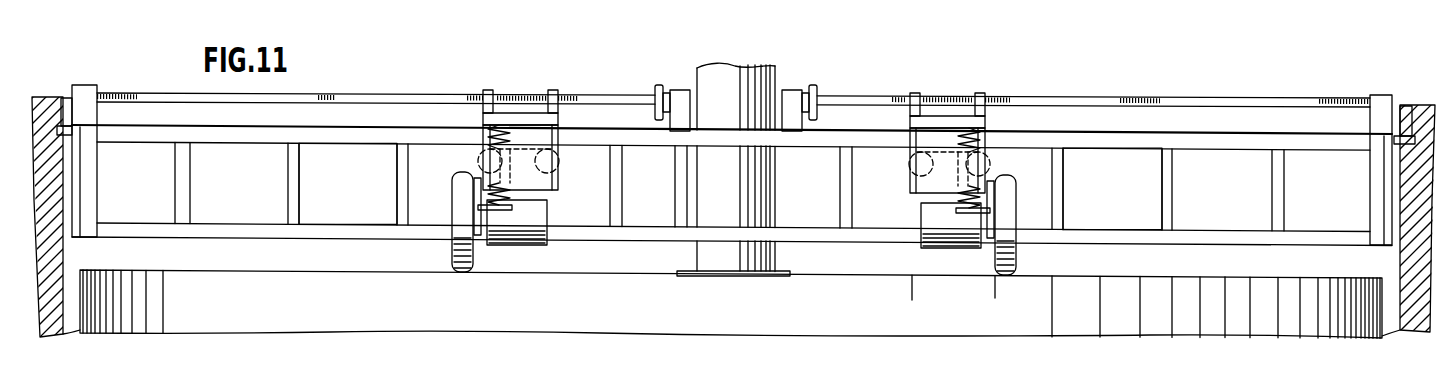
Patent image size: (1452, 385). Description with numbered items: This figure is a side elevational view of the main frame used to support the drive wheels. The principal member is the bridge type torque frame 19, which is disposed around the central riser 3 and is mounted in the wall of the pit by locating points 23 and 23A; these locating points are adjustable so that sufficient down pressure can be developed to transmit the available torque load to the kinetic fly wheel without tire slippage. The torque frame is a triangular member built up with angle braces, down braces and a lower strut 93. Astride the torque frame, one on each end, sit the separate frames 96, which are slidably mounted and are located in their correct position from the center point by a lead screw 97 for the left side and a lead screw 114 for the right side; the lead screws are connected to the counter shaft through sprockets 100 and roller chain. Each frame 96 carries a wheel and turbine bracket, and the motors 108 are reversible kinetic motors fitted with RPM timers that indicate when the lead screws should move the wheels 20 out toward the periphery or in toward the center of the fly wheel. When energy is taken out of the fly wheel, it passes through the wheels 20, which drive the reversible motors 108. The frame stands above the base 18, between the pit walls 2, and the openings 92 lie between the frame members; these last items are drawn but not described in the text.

The wall 2 is at (1405, 259).
The riser 3 is at (725, 65).
The base platform 18 is at (627, 317).
The torque frame 19 is at (1053, 128).
The wheels 20 is at (452, 253).
The locating point 23 is at (1408, 106).
The locating point 23A is at (60, 98).
The frame opening 92 is at (397, 179).
The lower strut 93 is at (1203, 231).
The frame 96 is at (491, 82).
The lead screw 97 is at (352, 96).
The sprocket 100 is at (656, 90).
The motor 108 is at (547, 241).
The lead screw 114 is at (1174, 100).